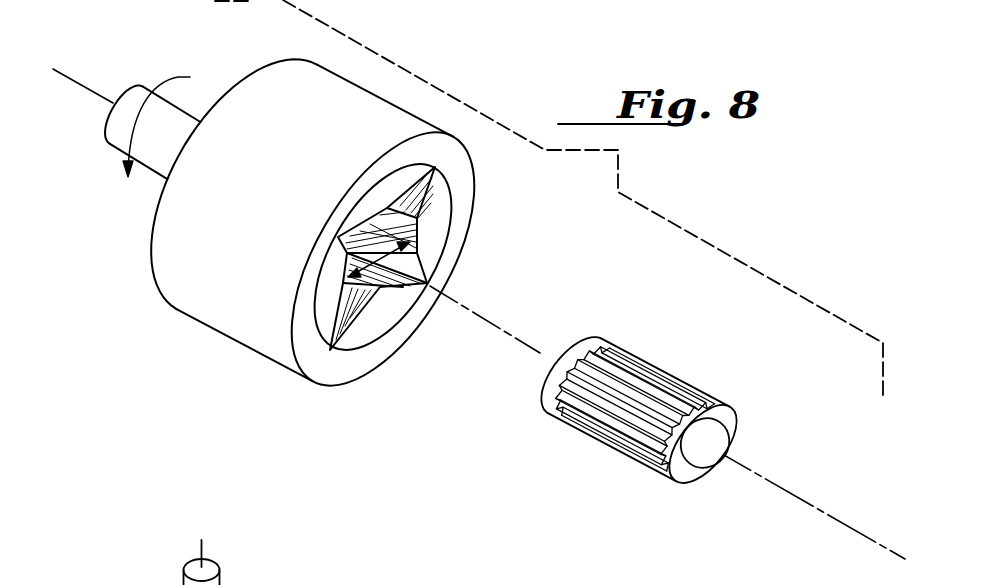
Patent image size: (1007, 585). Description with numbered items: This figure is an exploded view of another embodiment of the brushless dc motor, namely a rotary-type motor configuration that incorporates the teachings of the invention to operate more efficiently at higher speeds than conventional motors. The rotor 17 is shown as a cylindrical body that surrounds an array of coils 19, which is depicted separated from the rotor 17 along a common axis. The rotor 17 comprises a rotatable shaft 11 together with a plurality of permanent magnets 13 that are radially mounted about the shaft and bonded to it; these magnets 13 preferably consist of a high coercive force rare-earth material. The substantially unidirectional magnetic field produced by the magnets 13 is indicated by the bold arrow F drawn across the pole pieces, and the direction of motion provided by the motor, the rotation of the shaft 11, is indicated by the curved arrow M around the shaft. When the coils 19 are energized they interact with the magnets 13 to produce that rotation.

The rotatable shaft 11 is at (222, 583).
The permanent magnets 13 is at (372, 203).
The rotor 17 is at (240, 352).
The coils 19 is at (607, 416).
The bold arrows indicating unidirectional fields F is at (403, 290).
The arrows indicating direction of motion M is at (168, 78).